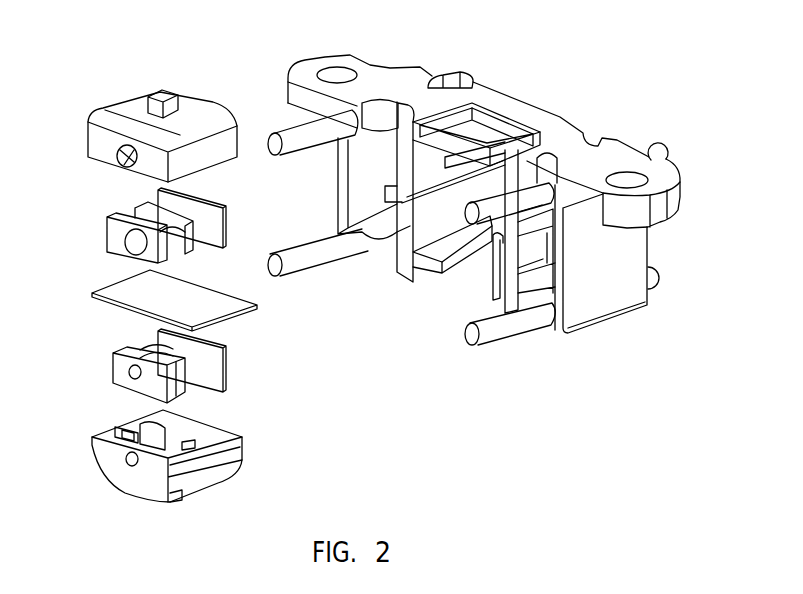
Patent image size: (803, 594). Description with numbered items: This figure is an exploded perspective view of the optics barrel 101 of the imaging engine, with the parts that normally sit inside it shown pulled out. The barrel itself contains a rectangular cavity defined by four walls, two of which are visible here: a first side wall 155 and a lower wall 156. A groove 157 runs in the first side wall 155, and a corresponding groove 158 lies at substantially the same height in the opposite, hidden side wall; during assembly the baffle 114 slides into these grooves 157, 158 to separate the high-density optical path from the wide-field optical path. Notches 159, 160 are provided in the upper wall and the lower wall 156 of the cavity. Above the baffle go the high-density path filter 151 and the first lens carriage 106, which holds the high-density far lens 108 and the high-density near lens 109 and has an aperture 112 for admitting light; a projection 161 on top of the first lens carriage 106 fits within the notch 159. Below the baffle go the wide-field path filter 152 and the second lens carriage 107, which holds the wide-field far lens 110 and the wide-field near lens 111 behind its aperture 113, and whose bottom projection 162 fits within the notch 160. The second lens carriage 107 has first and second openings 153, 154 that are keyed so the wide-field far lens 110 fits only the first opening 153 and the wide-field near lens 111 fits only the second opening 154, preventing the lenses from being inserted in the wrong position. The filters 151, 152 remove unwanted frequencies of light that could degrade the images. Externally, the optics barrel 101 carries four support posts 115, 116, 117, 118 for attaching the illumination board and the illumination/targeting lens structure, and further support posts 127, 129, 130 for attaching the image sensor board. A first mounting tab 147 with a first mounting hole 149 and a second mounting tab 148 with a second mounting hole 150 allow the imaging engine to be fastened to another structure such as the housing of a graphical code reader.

The optics barrel 101 is at (597, 322).
The first lens carriage 106 is at (100, 142).
The second lens carriage 107 is at (102, 458).
The high-density far lens 108 is at (116, 238).
The high-density near lens 109 is at (140, 212).
The wide-field far lens 110 is at (120, 372).
The wide-field near lens 111 is at (183, 383).
The aperture 112 is at (128, 166).
The aperture 113 is at (130, 464).
The baffle 114 is at (248, 310).
The support post 115 is at (296, 131).
The support post 116 is at (296, 262).
The support post 117 is at (523, 196).
The support post 118 is at (501, 342).
The support post 127 is at (458, 73).
The support post 129 is at (661, 149).
The support post 130 is at (662, 284).
The first mounting tab 147 is at (306, 73).
The second mounting tab 148 is at (663, 178).
The first mounting hole 149 is at (340, 78).
The second mounting hole 150 is at (648, 185).
The high-density path filter 151 is at (203, 201).
The wide-field path filter 152 is at (200, 349).
The first opening 153 is at (124, 432).
The second opening 154 is at (130, 431).
The first side wall 155 is at (412, 222).
The lower wall 156 is at (443, 250).
The groove 157 is at (403, 199).
The groove 158 is at (491, 305).
The notch 159 is at (472, 148).
The notch 160 is at (461, 268).
The projection 161 is at (163, 90).
The projection 162 is at (181, 497).